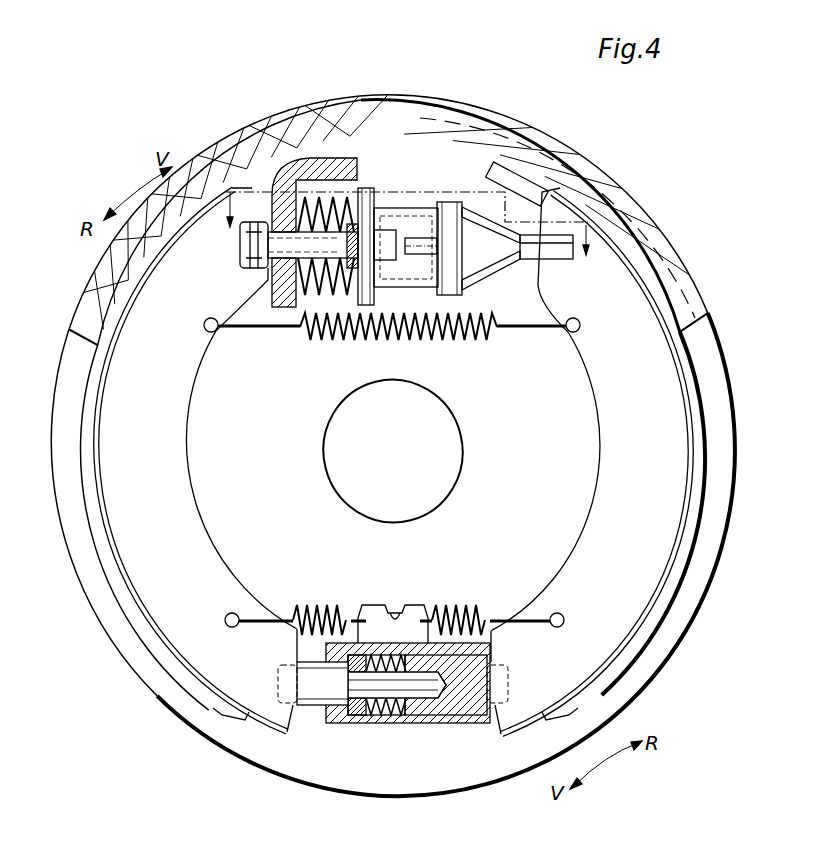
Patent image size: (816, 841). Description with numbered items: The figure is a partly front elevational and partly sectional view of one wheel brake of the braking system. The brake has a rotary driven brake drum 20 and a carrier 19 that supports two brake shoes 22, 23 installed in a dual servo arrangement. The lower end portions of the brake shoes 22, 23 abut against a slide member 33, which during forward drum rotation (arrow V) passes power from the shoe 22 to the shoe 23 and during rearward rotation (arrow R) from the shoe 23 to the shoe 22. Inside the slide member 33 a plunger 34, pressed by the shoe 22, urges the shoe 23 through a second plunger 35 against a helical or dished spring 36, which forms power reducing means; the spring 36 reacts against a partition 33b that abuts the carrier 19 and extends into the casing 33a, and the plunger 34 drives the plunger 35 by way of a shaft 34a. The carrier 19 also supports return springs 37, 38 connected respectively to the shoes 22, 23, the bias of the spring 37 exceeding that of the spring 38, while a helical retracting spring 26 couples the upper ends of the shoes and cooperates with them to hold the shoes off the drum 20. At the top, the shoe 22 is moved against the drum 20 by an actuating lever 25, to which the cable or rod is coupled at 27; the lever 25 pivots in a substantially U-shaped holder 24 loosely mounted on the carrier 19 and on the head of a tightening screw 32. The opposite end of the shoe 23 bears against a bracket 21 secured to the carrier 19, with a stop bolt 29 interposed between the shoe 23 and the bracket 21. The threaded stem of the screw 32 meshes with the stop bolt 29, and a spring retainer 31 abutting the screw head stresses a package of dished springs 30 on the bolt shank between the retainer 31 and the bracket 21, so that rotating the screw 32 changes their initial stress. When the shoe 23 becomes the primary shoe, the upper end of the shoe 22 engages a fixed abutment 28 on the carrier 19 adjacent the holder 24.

The carrier 19 is at (706, 364).
The brake drum 20 is at (662, 252).
The bracket 21 is at (291, 162).
The brake shoe 22 is at (604, 437).
The brake shoe 23 is at (191, 378).
The U-shaped holder 24 is at (412, 208).
The actuating lever 25 is at (482, 248).
The helical retracting spring 26 is at (285, 332).
The coupling point 27 is at (425, 266).
The fixed abutment 28 is at (522, 186).
The stop bolt 29 is at (280, 240).
The dished springs 30 is at (313, 196).
The spring retainer 31 is at (365, 188).
The tightening screw 32 is at (440, 226).
The slide member 33 is at (420, 724).
The casing 33a is at (400, 716).
The partition 33b is at (360, 720).
The plunger 34 is at (476, 712).
The shaft 34a is at (428, 690).
The second plunger 35 is at (313, 703).
The spring 36 is at (370, 712).
The return spring 37 is at (470, 614).
The return spring 38 is at (300, 614).